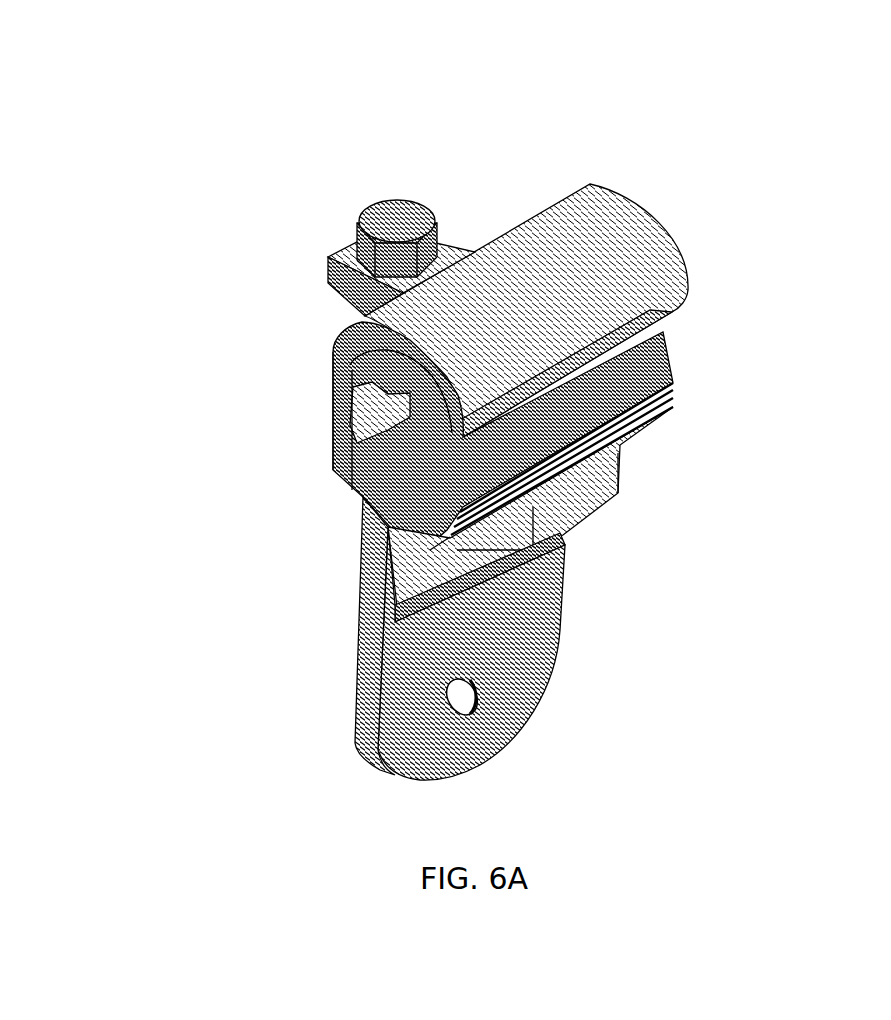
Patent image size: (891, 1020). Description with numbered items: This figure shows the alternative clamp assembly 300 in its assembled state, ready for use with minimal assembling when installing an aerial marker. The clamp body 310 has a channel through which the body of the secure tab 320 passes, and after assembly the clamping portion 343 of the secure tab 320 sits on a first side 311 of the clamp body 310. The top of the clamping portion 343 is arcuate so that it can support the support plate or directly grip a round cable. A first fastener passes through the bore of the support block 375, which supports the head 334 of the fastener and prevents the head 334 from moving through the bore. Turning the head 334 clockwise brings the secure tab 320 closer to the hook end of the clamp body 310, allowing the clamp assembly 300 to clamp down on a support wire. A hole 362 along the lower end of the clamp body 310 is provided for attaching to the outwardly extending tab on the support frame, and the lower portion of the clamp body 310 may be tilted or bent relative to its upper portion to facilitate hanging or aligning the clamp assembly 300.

The clamp assembly 300 is at (722, 192).
The head 334 is at (392, 208).
The support block 375 is at (457, 247).
The secure tab 320 is at (607, 487).
The clamping portion 343 is at (603, 457).
The clamp body 310 is at (527, 592).
The first side 311 is at (403, 580).
The hole 362 is at (470, 702).